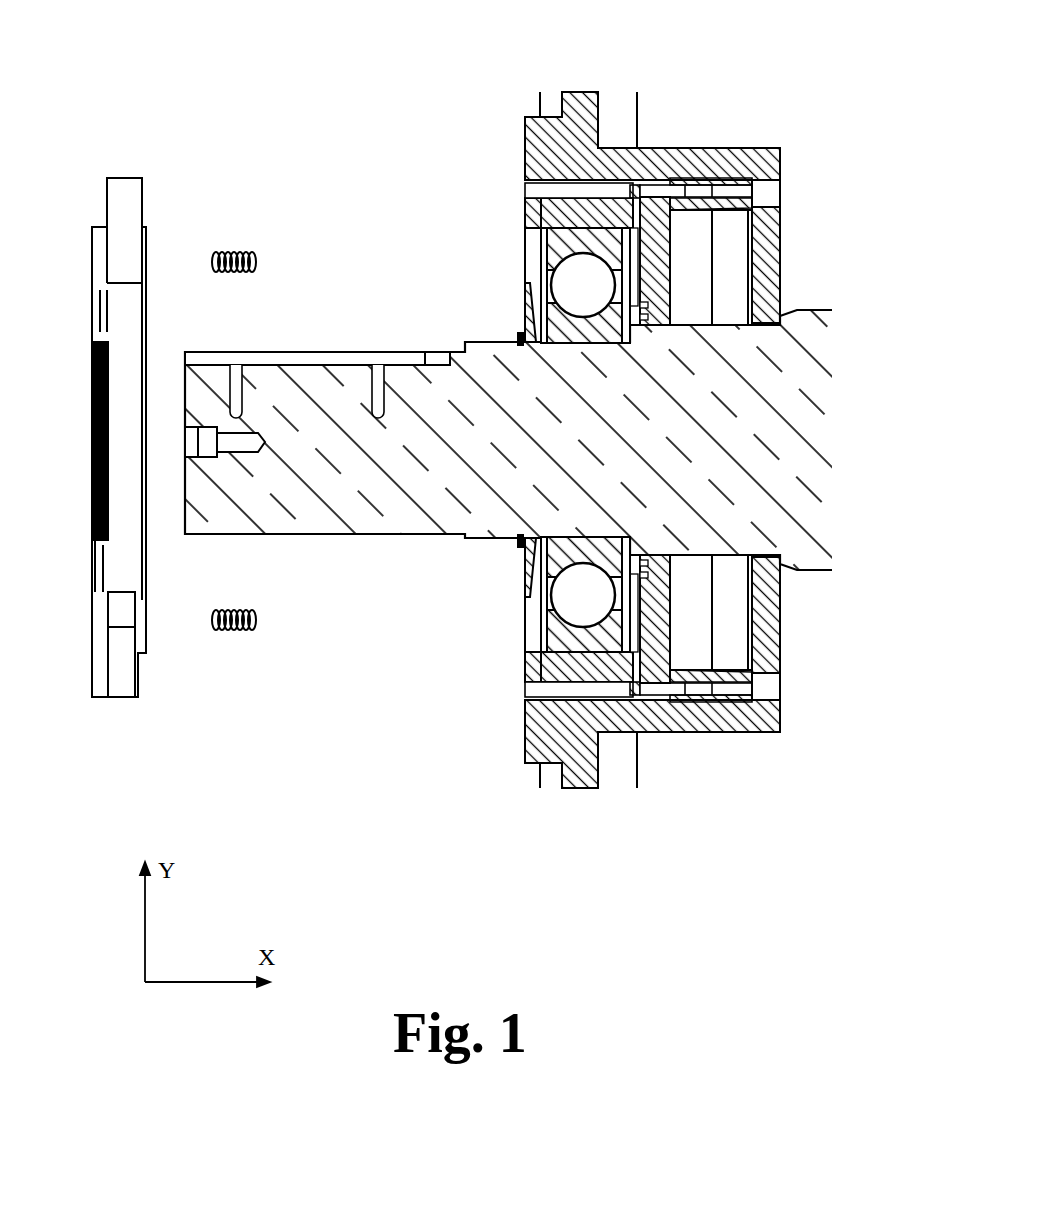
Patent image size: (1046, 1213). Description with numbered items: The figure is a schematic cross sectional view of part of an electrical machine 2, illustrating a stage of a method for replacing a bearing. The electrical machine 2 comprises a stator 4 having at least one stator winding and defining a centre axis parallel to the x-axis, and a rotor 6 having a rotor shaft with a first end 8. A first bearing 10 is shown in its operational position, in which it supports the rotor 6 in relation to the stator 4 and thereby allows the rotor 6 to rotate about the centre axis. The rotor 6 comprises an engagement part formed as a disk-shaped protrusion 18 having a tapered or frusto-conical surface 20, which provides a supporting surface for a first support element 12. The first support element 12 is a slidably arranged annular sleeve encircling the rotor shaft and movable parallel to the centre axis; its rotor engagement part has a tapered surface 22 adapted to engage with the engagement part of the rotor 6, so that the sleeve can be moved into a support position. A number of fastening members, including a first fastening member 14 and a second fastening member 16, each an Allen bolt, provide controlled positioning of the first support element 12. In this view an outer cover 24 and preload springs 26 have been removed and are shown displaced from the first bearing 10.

The electrical machine 2 is at (152, 77).
The stator 4 is at (649, 443).
The rotor 6 is at (508, 476).
The first end 8 is at (212, 503).
The first bearing 10 is at (535, 474).
The first support element 12 is at (684, 403).
The first fastening member 14 is at (638, 400).
The second fastening member 16 is at (734, 497).
The disk-shaped protrusion 18 is at (808, 435).
The tapered surface 20 is at (814, 420).
The tapered surface 22 is at (728, 383).
The outer cover 24 is at (83, 437).
The preload springs 26 is at (251, 446).